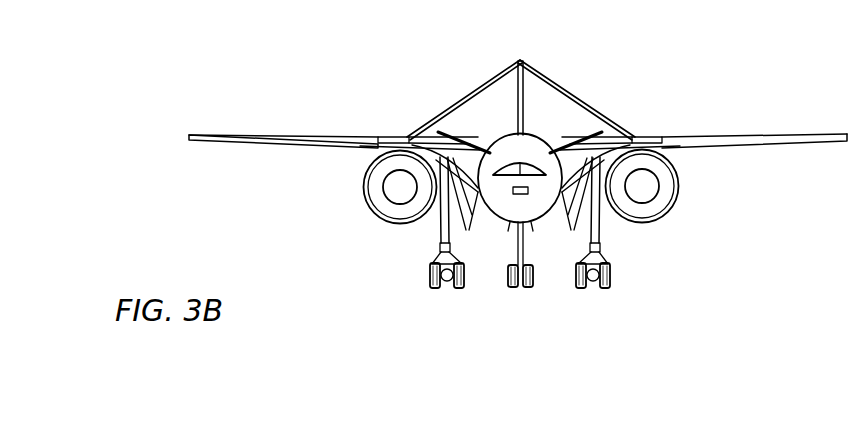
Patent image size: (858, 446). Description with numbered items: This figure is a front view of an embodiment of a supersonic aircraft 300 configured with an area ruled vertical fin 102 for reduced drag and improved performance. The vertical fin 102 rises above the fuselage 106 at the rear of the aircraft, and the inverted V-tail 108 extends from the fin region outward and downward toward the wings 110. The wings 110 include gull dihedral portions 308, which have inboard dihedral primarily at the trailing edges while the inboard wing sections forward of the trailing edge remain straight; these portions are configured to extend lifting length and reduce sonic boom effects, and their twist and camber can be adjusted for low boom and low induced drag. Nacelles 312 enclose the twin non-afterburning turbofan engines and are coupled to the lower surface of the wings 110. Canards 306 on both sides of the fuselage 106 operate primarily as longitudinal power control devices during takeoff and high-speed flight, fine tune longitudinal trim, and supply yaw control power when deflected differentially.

The aircraft 300 is at (250, 37).
The vertical fin 102 is at (515, 86).
The fuselage 106 is at (497, 221).
The inverted V-tail 108 is at (457, 100).
The wings 110 is at (770, 132).
The canards 306 is at (570, 142).
The gull dihedral portions 308 is at (456, 158).
The nacelles 312 is at (681, 193).